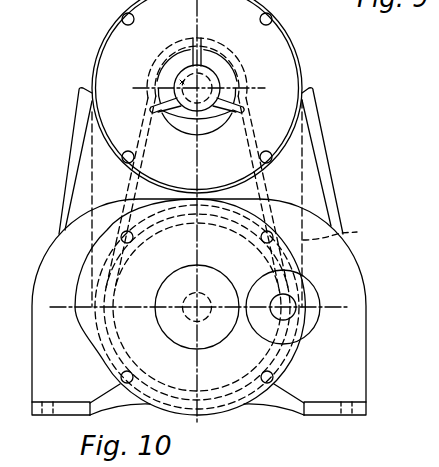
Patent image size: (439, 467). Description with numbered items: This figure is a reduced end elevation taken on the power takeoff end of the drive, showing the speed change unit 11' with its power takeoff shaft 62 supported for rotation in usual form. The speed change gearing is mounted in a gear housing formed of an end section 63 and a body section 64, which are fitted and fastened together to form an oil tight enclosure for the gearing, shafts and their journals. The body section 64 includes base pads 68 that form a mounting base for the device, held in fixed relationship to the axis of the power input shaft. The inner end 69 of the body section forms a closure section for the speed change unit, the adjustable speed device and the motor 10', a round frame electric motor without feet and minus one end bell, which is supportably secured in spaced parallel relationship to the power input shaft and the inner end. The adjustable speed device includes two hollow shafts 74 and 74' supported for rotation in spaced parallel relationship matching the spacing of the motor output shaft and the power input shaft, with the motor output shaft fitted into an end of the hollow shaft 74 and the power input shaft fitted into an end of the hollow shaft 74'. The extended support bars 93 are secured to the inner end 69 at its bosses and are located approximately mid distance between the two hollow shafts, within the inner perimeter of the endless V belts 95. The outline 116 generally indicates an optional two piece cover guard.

The motor 10' is at (211, 96).
The speed change unit 11' is at (175, 211).
The hollow shaft 74 is at (182, 86).
The endless V belts 95 is at (252, 124).
The extended support bars 93 is at (163, 186).
The inner end 69 is at (328, 181).
The two piece cover guard 116 is at (348, 235).
The end section 63 is at (190, 307).
The power takeoff shaft 62 is at (291, 299).
The hollow shaft 74' is at (180, 307).
The body section 64 is at (361, 373).
The base pads 68 is at (372, 407).